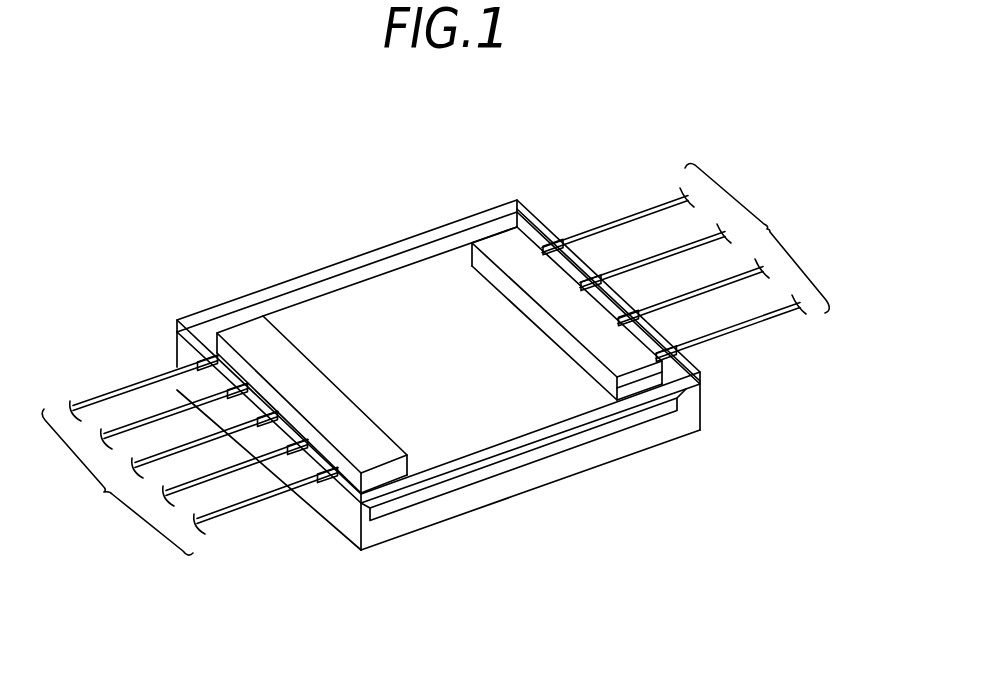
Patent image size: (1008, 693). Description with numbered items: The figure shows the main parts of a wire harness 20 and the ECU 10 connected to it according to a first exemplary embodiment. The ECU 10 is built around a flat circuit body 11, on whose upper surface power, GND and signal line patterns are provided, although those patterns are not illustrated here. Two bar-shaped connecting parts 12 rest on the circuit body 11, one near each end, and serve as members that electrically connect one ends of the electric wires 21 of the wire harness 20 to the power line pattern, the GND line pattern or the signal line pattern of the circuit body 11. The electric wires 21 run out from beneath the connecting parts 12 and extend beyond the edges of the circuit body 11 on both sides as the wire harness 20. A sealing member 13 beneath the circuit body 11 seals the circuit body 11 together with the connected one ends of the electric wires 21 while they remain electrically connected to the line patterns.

The ECU 10 is at (474, 427).
The circuit body 11 is at (555, 452).
The connecting parts 12 is at (242, 323).
The sealing member 13 is at (412, 535).
The wire harness 20 is at (435, 373).
The electric wires 21 is at (262, 505).